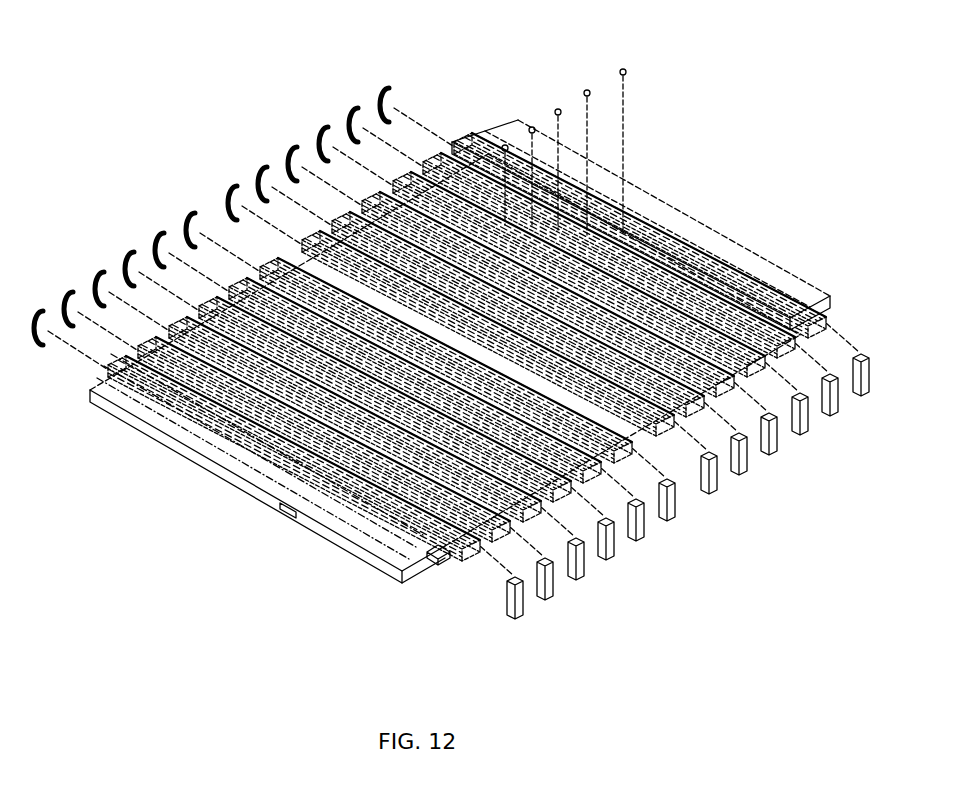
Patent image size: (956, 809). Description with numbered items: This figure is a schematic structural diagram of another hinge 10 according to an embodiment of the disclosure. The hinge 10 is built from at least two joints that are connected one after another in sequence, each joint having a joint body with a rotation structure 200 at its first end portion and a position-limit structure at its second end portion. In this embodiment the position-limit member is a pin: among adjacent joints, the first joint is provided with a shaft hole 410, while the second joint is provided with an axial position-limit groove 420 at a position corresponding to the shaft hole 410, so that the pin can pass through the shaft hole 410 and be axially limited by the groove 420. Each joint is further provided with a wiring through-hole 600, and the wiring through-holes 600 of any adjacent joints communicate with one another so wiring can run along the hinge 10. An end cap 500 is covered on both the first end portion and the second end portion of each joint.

The hinge 10 is at (672, 103).
The rotation structure 200 is at (437, 565).
The shaft hole 410 is at (290, 447).
The axial position-limit groove 420 is at (286, 452).
The end cap 500 is at (550, 575).
The wiring through-hole 600 is at (280, 292).